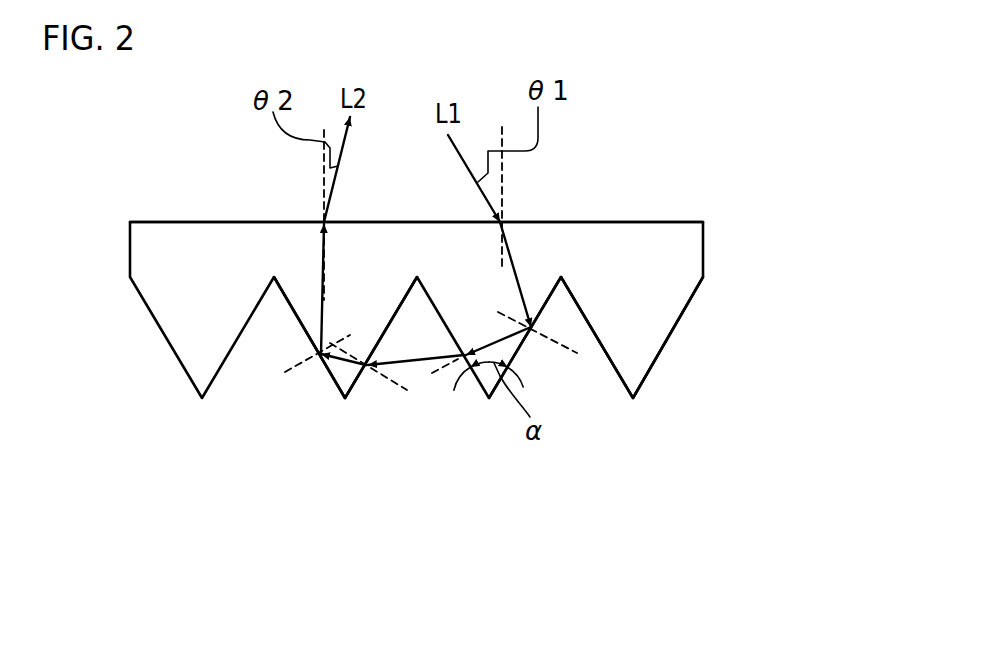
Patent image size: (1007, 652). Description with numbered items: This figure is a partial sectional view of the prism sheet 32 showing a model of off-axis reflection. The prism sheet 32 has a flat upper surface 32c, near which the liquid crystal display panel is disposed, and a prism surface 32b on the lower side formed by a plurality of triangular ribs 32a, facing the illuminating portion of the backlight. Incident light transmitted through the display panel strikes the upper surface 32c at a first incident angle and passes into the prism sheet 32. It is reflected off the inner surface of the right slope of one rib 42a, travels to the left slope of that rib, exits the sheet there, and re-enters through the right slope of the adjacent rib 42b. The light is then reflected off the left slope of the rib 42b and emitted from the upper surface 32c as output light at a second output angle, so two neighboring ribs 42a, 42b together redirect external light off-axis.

The prism sheet 32 is at (688, 250).
The ribs 32a is at (650, 353).
The prism surface 32b is at (293, 319).
The upper surface 32c is at (600, 222).
The rib 42a is at (512, 352).
The rib 42b is at (350, 378).